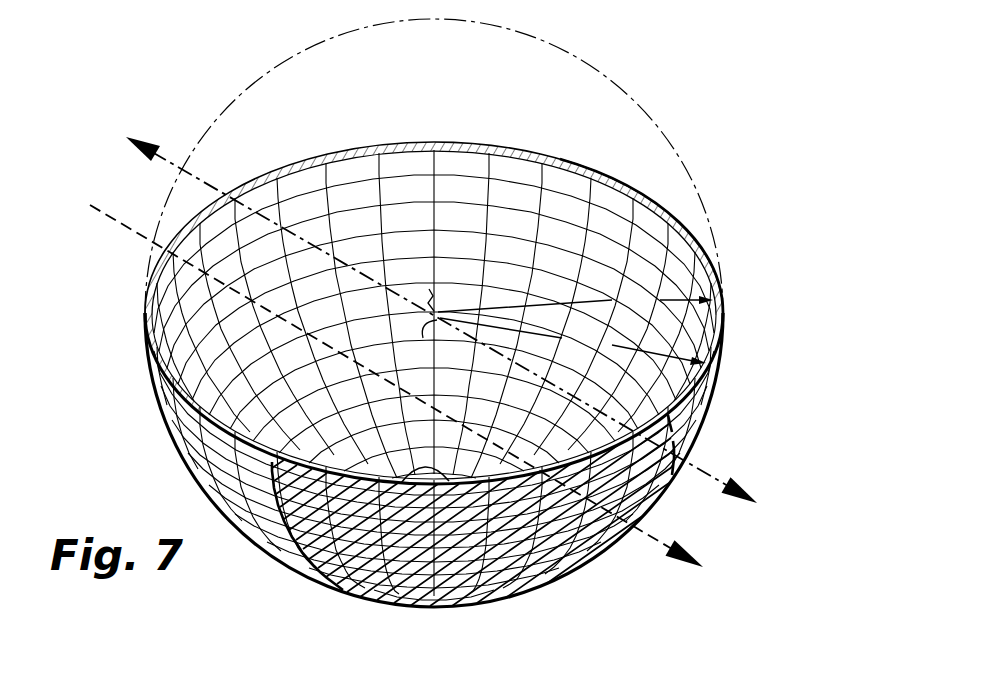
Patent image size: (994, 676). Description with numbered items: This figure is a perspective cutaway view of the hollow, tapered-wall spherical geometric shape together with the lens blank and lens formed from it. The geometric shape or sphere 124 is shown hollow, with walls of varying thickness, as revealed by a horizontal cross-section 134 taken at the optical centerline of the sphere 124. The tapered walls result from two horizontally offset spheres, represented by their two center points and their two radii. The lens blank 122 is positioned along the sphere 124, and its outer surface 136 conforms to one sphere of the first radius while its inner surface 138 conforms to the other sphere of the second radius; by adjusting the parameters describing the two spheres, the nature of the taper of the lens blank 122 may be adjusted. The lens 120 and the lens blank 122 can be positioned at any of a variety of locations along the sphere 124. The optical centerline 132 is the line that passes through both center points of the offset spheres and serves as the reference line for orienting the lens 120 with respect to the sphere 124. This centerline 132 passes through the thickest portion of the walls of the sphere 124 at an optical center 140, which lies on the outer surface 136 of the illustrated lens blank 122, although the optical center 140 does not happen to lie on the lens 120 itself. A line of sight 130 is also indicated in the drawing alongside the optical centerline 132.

The lens 120 is at (460, 603).
The lens blank 122 is at (664, 422).
The sphere 124 is at (722, 374).
The line of sight 130 is at (116, 226).
The optical centerline 132 is at (160, 152).
The horizontal cross-section 134 is at (722, 326).
The outer surface 136 is at (540, 592).
The inner surface 138 is at (370, 597).
The optical center 140 is at (662, 439).